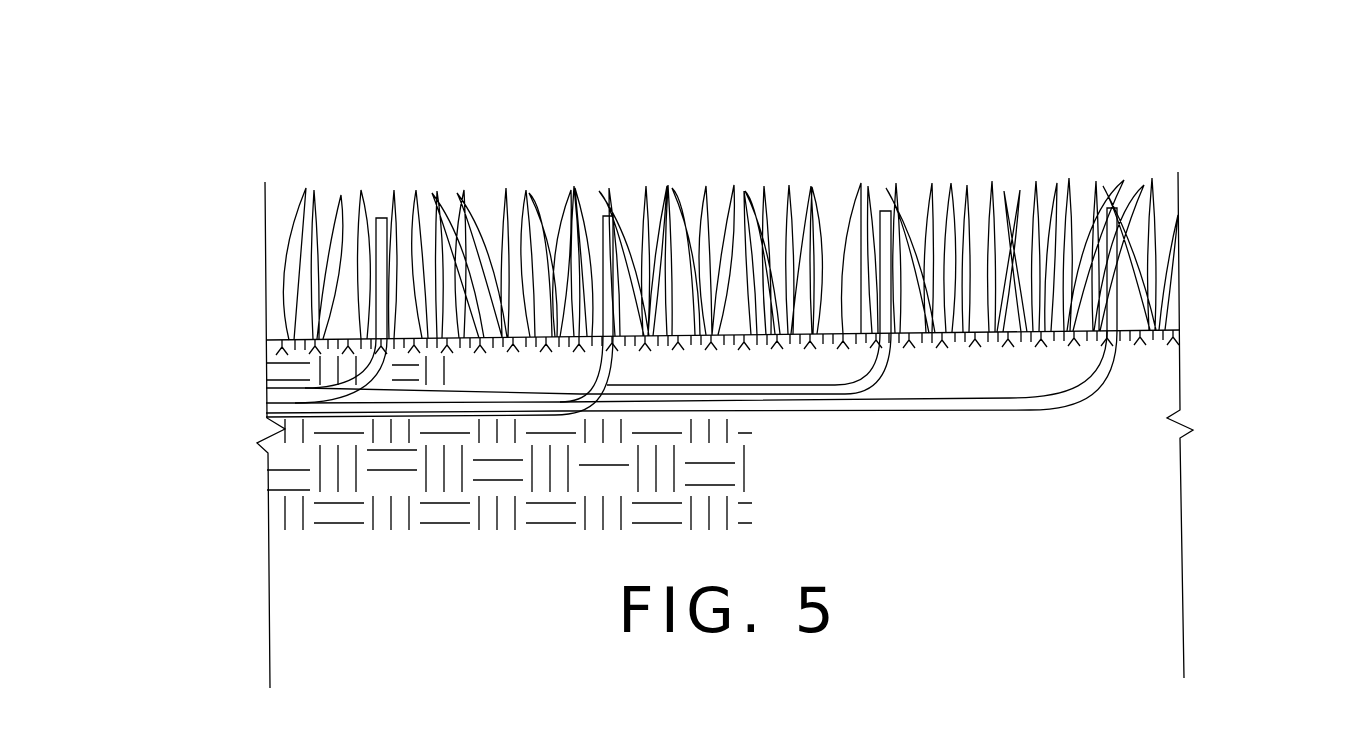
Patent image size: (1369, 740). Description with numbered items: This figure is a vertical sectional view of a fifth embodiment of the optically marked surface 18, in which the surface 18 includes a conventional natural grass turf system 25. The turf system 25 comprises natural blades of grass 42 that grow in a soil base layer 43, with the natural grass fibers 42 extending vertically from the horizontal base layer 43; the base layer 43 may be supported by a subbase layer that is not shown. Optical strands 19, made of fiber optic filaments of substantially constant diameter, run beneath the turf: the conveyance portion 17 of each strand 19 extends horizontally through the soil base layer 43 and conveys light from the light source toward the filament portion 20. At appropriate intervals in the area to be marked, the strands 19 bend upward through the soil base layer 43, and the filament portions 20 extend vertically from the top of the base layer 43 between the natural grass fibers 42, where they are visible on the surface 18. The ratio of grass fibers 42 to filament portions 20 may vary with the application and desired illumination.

The conveyance portion 17 is at (328, 392).
The surface 18 is at (1015, 128).
The optical material 19 is at (388, 367).
The filament portion 20 is at (378, 232).
The natural grass turf system 25 is at (1223, 220).
The natural grass fibers 42 is at (553, 222).
The soil base layer 43 is at (288, 373).